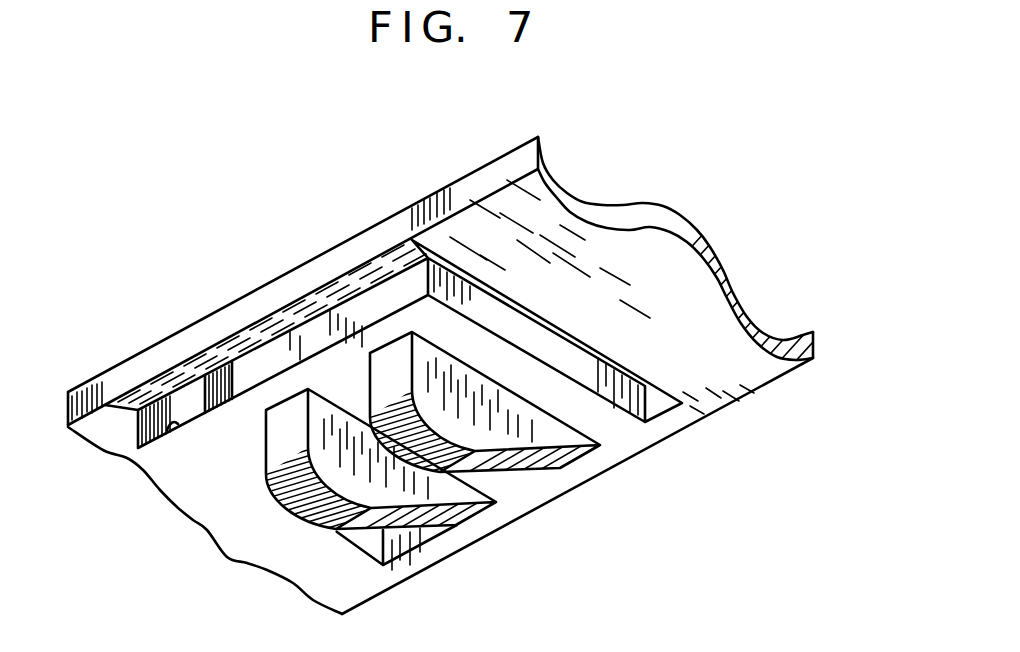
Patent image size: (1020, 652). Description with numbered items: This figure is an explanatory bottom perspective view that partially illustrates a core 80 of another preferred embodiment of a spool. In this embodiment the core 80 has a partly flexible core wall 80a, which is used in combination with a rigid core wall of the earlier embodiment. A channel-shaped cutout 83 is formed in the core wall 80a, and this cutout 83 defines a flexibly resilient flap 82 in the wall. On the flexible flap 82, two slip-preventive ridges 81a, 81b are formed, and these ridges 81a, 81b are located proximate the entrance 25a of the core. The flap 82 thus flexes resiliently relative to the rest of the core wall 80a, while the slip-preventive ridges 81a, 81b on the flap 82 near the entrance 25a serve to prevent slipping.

The core 80 is at (440, 150).
The partly flexible core wall 80a is at (392, 230).
The entrance 25a is at (637, 447).
The slip-preventive ridge 81a is at (512, 437).
The slip-preventive ridge 81b is at (412, 490).
The flexibly resilient flap 82 is at (228, 415).
The channel-shaped cutout 83 is at (173, 437).